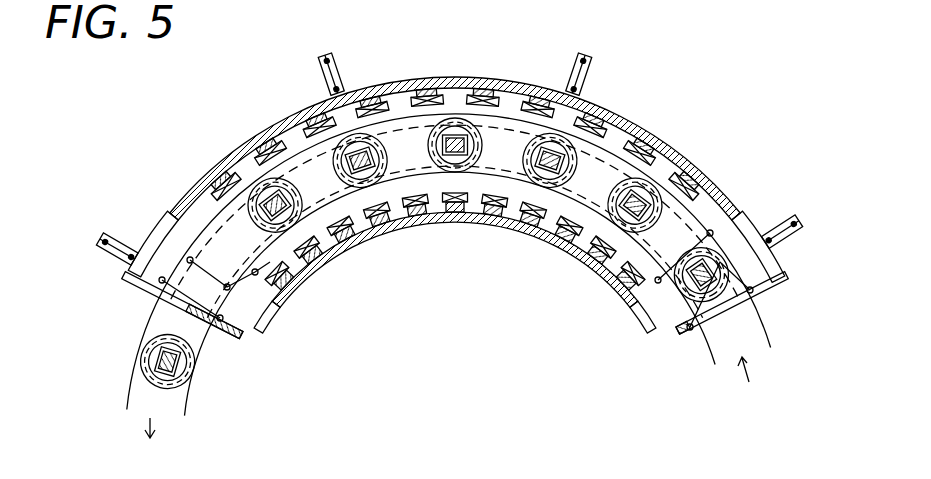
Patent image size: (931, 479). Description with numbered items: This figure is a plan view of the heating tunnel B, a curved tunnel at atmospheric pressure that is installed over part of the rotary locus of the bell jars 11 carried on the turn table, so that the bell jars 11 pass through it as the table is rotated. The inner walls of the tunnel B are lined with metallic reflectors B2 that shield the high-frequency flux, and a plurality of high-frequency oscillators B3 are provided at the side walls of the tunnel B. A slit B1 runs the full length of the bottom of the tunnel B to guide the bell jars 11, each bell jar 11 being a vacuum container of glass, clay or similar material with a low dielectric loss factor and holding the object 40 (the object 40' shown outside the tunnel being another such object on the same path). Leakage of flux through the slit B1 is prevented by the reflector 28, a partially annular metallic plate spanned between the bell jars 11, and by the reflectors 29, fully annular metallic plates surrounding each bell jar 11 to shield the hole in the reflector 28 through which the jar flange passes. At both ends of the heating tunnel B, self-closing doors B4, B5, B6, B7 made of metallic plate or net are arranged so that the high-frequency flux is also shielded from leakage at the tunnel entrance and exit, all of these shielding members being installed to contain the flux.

The heating tunnel B is at (673, 148).
The slit B1 is at (598, 158).
The metallic reflectors B2 is at (700, 197).
The high-frequency oscillators B3 is at (437, 258).
The self-closing door B4 is at (690, 322).
The self-closing door B5 is at (660, 282).
The self-closing door B6 is at (243, 280).
The self-closing door B7 is at (205, 318).
The bell jar 11 is at (432, 128).
The reflector 28 is at (150, 317).
The reflectors 29 is at (195, 398).
The object 40 is at (497, 200).
The carrier roller 40' is at (118, 354).